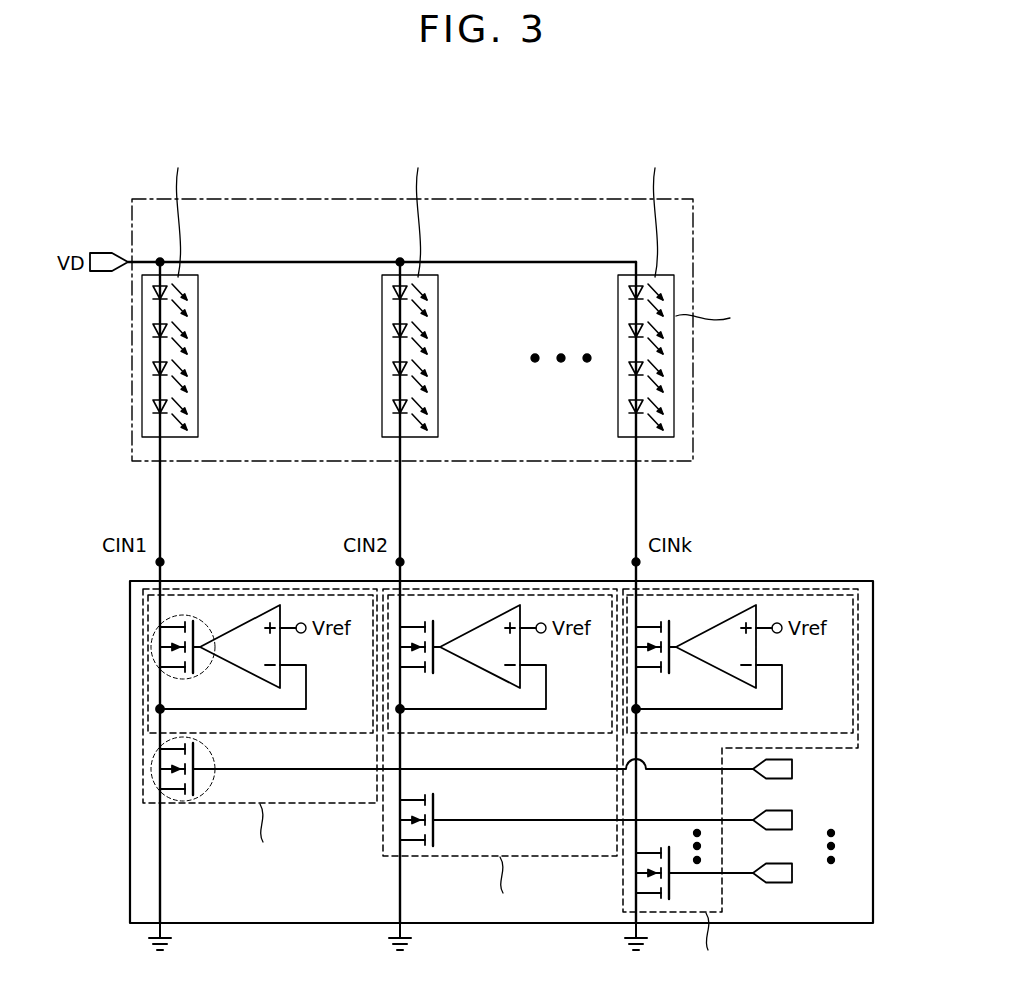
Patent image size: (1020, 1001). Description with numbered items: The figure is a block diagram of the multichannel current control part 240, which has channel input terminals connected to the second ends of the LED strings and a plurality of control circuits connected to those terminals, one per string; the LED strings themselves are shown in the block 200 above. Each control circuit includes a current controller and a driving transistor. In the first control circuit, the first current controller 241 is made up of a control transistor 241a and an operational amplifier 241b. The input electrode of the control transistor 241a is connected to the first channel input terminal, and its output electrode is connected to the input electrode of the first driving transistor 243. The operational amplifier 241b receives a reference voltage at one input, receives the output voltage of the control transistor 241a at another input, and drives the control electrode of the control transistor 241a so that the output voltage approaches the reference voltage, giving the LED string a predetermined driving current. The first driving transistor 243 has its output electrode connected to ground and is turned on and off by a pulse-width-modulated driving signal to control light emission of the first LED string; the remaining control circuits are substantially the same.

The light source unit (LED strings) 200 is at (693, 238).
The multichannel current control part 240 is at (470, 763).
The first current controller 241 is at (221, 641).
The control transistor 241a is at (191, 612).
The operational amplifier 241b is at (260, 612).
The first driving transistor 243 is at (152, 770).